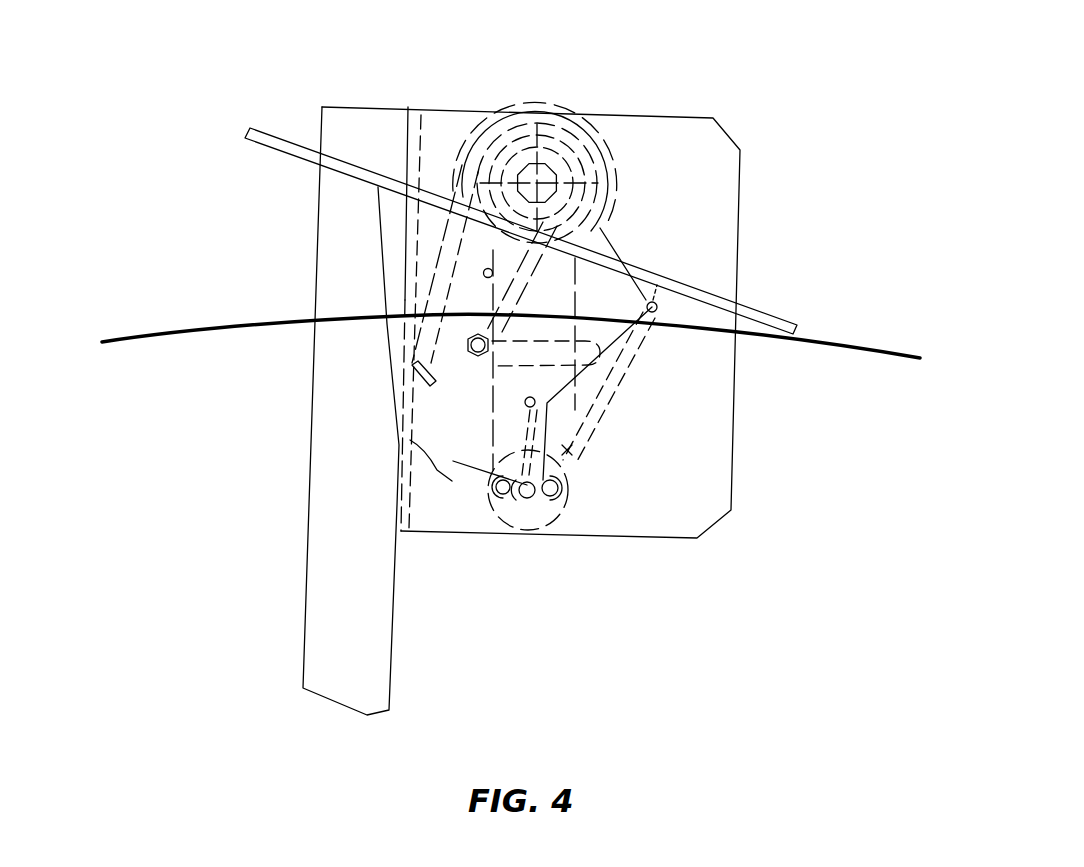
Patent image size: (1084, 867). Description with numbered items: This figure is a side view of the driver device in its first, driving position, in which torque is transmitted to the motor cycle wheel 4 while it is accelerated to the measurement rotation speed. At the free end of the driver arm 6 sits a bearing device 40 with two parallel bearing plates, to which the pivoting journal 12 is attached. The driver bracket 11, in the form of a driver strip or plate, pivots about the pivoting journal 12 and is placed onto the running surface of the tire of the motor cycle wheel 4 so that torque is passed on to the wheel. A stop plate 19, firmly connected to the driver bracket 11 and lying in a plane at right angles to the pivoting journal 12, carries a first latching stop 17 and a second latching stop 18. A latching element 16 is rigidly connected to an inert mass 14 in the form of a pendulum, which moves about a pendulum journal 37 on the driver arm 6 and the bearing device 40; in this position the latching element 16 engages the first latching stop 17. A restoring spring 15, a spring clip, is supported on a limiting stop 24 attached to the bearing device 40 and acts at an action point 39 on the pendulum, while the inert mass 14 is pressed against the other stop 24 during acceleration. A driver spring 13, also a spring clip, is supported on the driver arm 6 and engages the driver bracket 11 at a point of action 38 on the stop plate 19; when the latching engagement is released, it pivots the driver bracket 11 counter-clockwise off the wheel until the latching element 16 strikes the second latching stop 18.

The motor cycle wheel 4 is at (112, 346).
The driver arm 6 is at (335, 533).
The driver bracket 11 is at (297, 153).
The pivoting journal 12 is at (537, 183).
The driver spring 13 is at (450, 265).
The inert mass 14 is at (545, 108).
The restoring spring 15 is at (597, 393).
The latching element 16 is at (556, 510).
The first latching stop 17 is at (543, 447).
The second latching stop 18 is at (450, 460).
The stop plate 19 is at (385, 373).
The stop 24 is at (493, 272).
The pendulum journal 37 is at (525, 497).
The point of action 38 is at (468, 345).
The action point 39 is at (525, 404).
The bearing device 40 is at (660, 468).